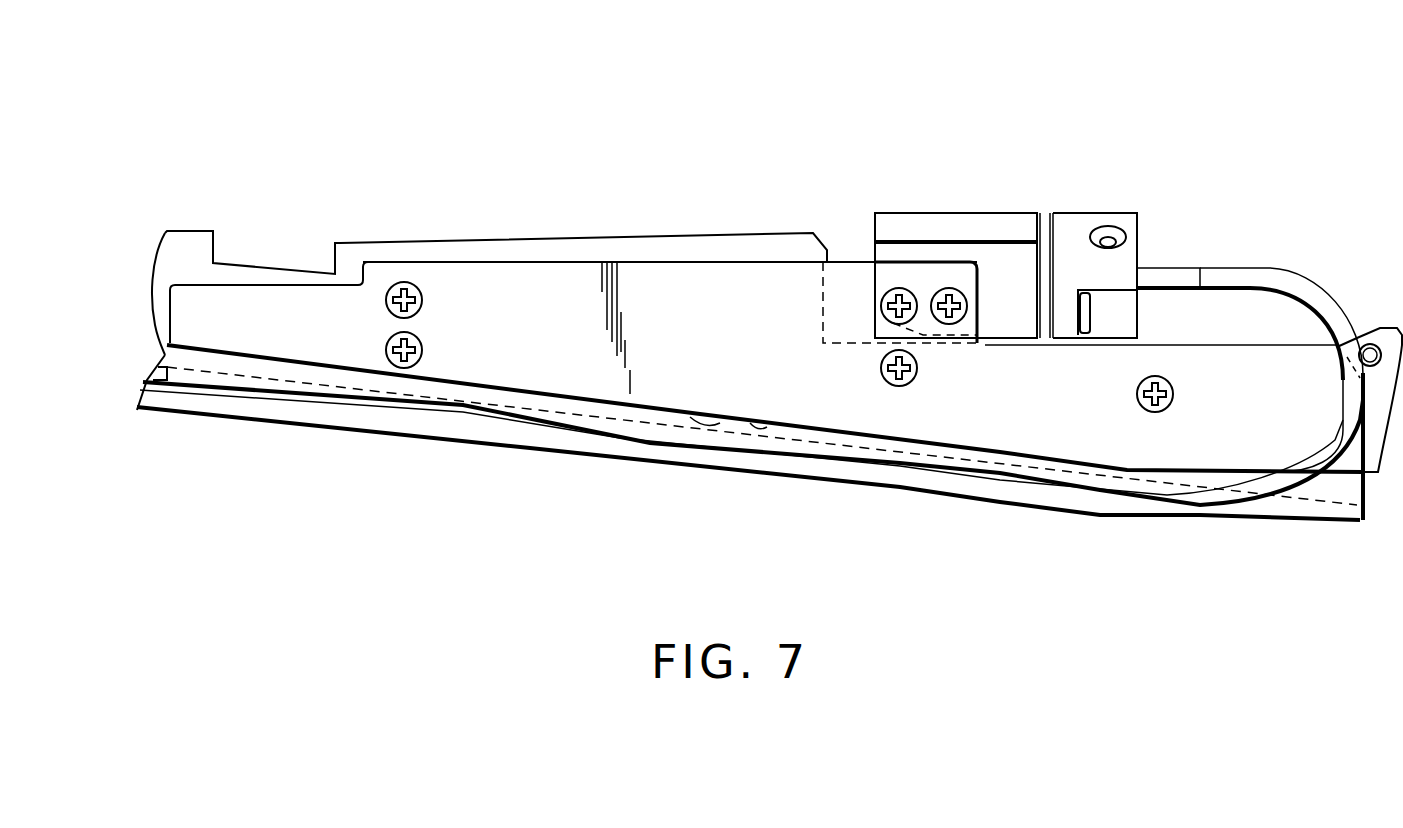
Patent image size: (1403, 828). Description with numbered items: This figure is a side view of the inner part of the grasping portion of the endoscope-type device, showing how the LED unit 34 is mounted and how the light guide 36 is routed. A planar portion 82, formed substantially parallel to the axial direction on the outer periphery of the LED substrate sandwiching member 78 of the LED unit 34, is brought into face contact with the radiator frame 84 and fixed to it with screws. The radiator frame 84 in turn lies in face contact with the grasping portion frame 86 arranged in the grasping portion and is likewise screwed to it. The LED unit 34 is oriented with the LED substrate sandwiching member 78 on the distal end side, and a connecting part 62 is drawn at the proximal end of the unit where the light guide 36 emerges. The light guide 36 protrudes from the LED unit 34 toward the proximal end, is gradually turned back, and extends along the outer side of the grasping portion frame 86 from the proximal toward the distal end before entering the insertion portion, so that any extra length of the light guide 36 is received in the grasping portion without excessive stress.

The LED unit 34 is at (1055, 170).
The light guide 36 is at (1285, 266).
The connecting member 62 is at (1172, 272).
The LED substrate sandwiching member 78 is at (1000, 245).
The planar portion 82 is at (930, 250).
The radiator frame 84 is at (763, 295).
The grasping portion frame 86 is at (670, 250).